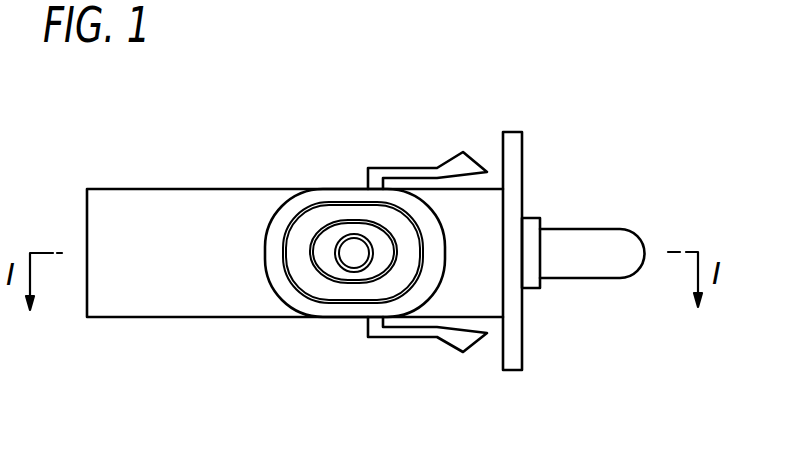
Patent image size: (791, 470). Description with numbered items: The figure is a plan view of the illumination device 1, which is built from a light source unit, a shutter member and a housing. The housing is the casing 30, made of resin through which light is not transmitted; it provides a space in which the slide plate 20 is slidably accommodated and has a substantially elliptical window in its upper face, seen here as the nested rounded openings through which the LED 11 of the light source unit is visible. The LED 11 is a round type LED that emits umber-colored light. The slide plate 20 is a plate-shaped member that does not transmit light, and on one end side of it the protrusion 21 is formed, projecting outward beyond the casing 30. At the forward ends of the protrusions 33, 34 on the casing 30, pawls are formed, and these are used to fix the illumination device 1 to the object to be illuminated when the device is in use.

The illumination device 1 is at (524, 106).
The LED 11 is at (350, 256).
The slide plate 20 is at (589, 184).
The protrusion 21 is at (602, 228).
The casing 30 is at (207, 205).
The protrusion 33 is at (403, 168).
The protrusion 34 is at (403, 337).